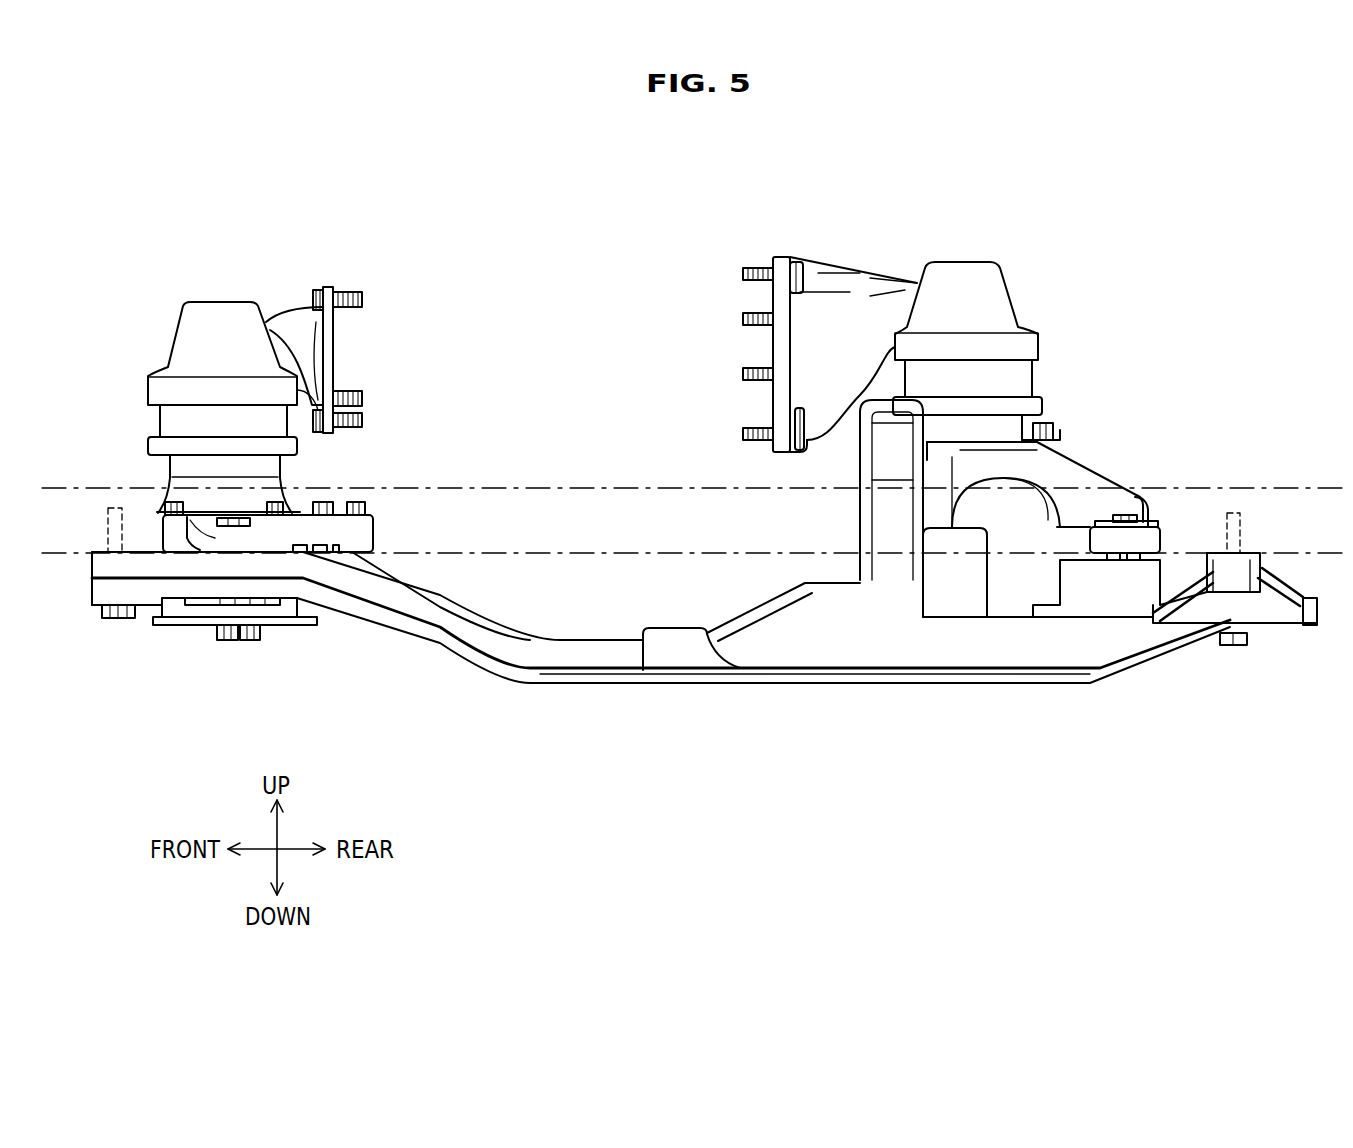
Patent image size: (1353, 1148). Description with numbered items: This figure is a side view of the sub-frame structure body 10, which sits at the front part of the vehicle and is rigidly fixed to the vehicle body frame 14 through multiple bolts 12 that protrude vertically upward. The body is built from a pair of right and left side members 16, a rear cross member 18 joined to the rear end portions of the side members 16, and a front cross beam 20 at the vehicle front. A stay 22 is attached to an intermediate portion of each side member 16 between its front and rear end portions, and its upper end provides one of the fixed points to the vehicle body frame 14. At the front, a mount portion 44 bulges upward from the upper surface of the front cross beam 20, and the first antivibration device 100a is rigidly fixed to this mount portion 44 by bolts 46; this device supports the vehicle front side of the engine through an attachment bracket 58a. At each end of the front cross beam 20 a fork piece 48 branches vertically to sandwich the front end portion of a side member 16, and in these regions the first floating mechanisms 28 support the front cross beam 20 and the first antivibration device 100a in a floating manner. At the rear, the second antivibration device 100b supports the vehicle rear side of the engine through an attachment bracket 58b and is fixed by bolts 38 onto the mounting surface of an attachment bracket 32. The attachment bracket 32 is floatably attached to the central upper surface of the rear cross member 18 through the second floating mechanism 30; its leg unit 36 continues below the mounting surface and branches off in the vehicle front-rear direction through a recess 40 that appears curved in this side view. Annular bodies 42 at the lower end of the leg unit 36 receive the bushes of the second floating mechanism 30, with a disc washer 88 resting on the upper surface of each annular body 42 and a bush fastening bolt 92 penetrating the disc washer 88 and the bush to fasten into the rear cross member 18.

The sub-frame structure body 10 is at (947, 180).
The bolt 12 is at (108, 507).
The vehicle body frame 14 is at (1303, 487).
The side member 16 is at (608, 690).
The rear cross member 18 is at (1167, 573).
The front cross beam 20 is at (185, 630).
The stay 22 is at (858, 458).
The first floating mechanism 28 is at (318, 512).
The second floating mechanism 30 is at (1122, 514).
The attachment bracket 32 is at (1093, 455).
The leg unit 36 is at (1056, 535).
The bolt 38 is at (1043, 423).
The recess 40 is at (1060, 497).
The annular body 42 is at (1163, 537).
The mount portion 44 is at (205, 530).
The bolt 46 is at (172, 507).
The fork piece 48 is at (321, 530).
The attachment bracket 58a is at (333, 343).
The attachment bracket 58b is at (773, 347).
The disc washer 88 is at (1152, 522).
The bush fastening bolt 92 is at (1140, 508).
The first antivibration device 100a is at (178, 303).
The second antivibration device 100b is at (1022, 283).